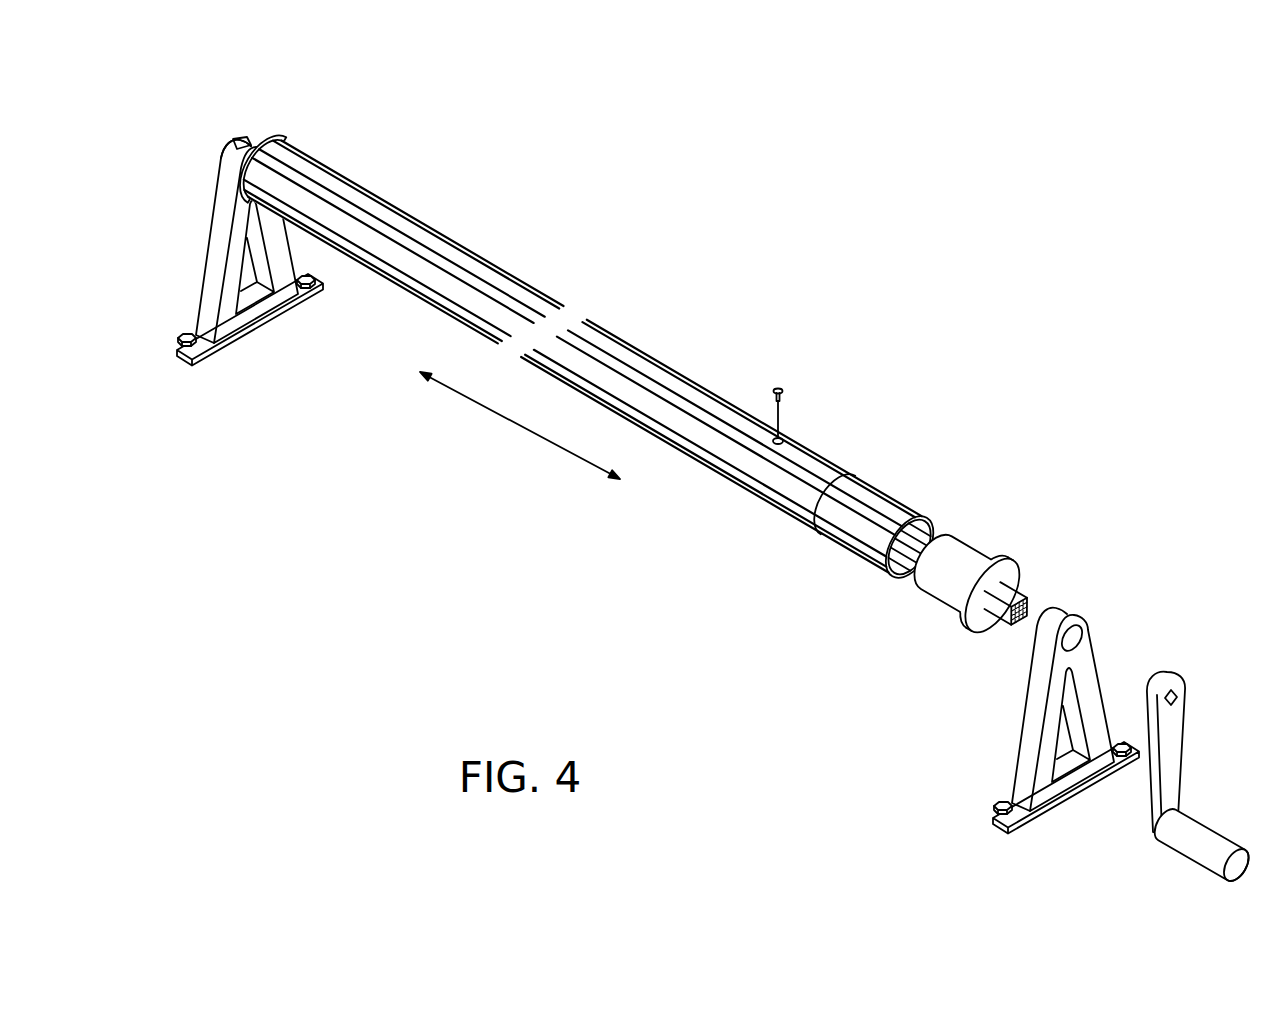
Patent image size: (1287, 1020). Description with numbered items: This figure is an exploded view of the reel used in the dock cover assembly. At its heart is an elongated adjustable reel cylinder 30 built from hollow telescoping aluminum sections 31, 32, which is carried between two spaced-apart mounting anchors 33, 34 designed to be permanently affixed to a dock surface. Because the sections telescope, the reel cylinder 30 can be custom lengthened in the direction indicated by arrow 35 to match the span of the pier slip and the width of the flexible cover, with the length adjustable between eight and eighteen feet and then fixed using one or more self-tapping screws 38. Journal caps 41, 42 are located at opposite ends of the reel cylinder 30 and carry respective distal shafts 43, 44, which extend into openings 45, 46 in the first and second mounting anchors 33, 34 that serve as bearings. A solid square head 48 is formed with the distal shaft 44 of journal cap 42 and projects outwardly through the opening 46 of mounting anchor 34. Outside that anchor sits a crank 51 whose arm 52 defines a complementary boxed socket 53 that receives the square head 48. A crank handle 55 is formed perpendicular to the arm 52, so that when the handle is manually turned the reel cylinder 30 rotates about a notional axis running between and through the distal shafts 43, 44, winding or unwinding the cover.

The adjustable reel cylinder 30 is at (648, 382).
The telescoping section 31 is at (588, 358).
The telescoping section 32 is at (873, 526).
The mounting anchor 33 is at (216, 222).
The mounting anchor 34 is at (1042, 704).
The arrow 35 is at (515, 424).
The self-tapping screw 38 is at (773, 392).
The journal cap 41 is at (266, 169).
The journal cap 42 is at (965, 579).
The distal shaft 43 is at (228, 162).
The distal shaft 44 is at (1002, 601).
The opening 45 is at (240, 150).
The opening 46 is at (1076, 637).
The square head 48 is at (1018, 611).
The crank 51 is at (1187, 747).
The arm 52 is at (1166, 783).
The boxed socket 53 is at (1176, 690).
The crank handle 55 is at (1206, 831).